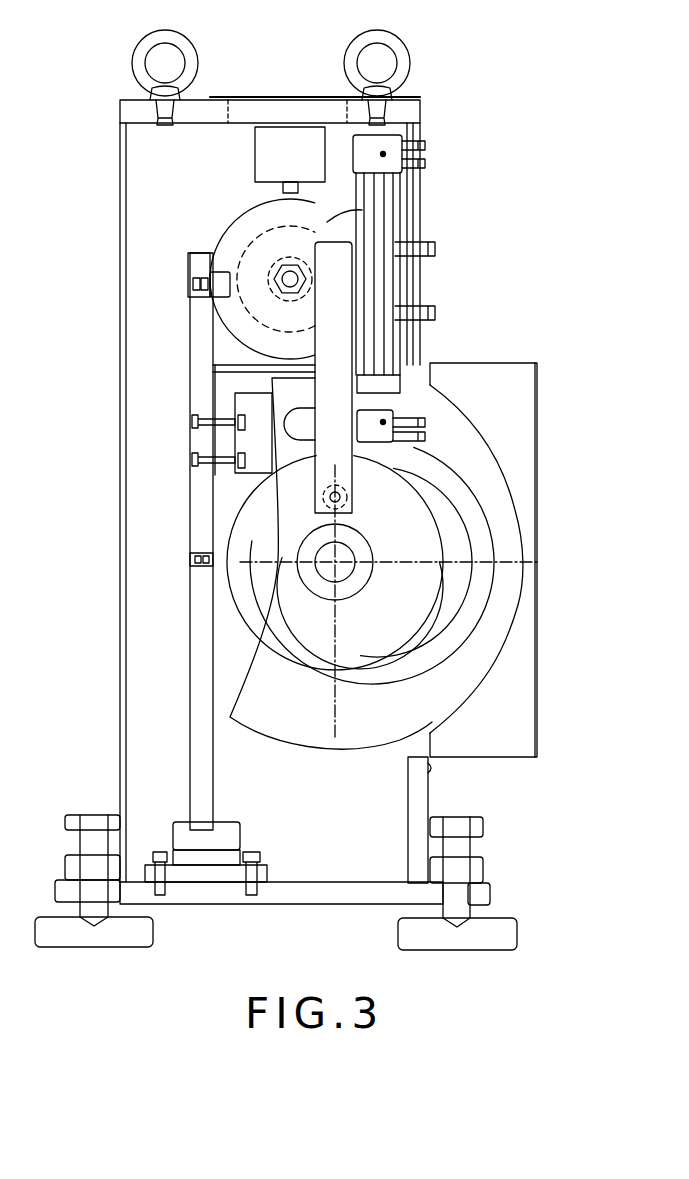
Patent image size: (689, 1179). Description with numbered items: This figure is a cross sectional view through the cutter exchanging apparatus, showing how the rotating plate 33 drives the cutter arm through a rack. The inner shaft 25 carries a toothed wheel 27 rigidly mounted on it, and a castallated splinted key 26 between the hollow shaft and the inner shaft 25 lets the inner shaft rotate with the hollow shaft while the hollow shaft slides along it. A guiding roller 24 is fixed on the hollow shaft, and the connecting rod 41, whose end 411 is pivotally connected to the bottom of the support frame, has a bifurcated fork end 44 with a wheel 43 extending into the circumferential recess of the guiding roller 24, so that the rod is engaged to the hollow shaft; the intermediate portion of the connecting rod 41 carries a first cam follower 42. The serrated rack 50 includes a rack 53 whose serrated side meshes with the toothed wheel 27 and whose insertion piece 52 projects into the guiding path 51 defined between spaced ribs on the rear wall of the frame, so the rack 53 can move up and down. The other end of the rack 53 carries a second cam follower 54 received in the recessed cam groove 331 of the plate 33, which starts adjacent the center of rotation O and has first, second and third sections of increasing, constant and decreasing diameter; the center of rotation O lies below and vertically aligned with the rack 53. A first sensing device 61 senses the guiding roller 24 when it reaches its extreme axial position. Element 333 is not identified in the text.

The first sensing device 61 is at (288, 187).
The toothed wheel 27 is at (283, 257).
The guiding roller 24 is at (265, 258).
The castallated splinted key 26 is at (262, 266).
The inner shaft 25 is at (270, 280).
The wheel 43 is at (200, 290).
The fork end 44 is at (218, 380).
The first cam follower 42 is at (200, 565).
The connecting rod 41 is at (205, 690).
The end of the connecting rod 411 is at (173, 830).
The serrated rack 50 is at (385, 240).
The guiding path 51 is at (362, 218).
The rack 53 is at (340, 292).
The insertion piece 52 is at (385, 395).
The second cam follower 54 is at (348, 497).
The center of rotation O is at (340, 567).
The plate 33 is at (487, 655).
The recessed cam groove 331 is at (481, 577).
The shield plate 333 is at (302, 422).